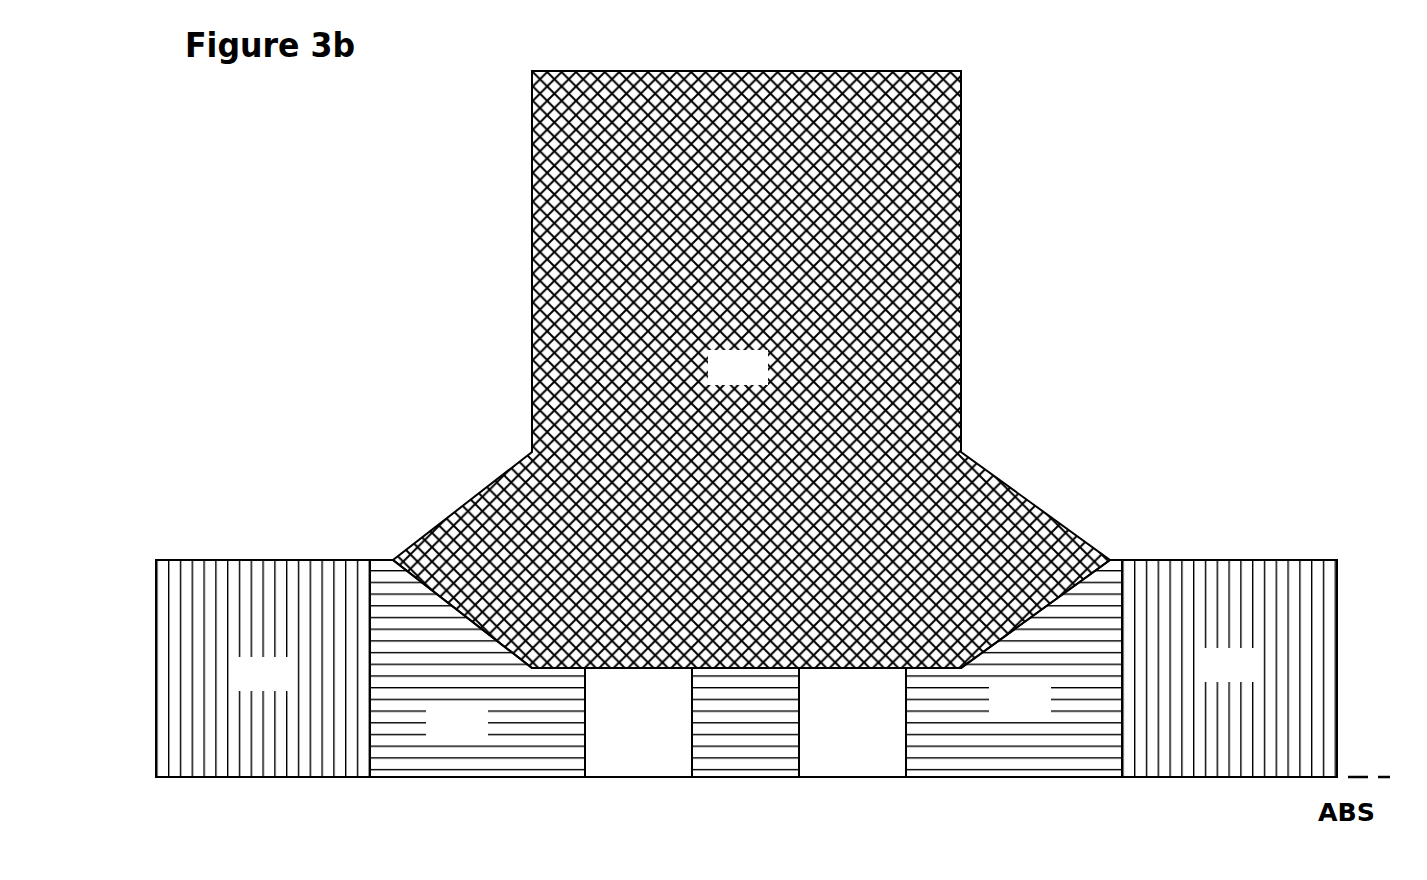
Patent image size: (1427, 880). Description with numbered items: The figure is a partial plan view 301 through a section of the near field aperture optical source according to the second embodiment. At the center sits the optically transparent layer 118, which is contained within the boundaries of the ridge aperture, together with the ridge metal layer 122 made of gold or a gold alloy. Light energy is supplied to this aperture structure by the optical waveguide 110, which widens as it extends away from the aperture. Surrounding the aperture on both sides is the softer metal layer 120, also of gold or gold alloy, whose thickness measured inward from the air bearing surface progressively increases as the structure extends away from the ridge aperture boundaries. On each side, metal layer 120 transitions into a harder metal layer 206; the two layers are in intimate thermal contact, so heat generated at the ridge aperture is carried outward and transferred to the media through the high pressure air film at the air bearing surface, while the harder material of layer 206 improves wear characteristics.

The optical waveguide 110 is at (765, 381).
The optically transparent layer 118 is at (638, 723).
The metal layer 120 is at (484, 733).
The ridge metal layer 122 is at (747, 723).
The metal layer 206 is at (290, 688).
The partial plan view 301 is at (1067, 98).